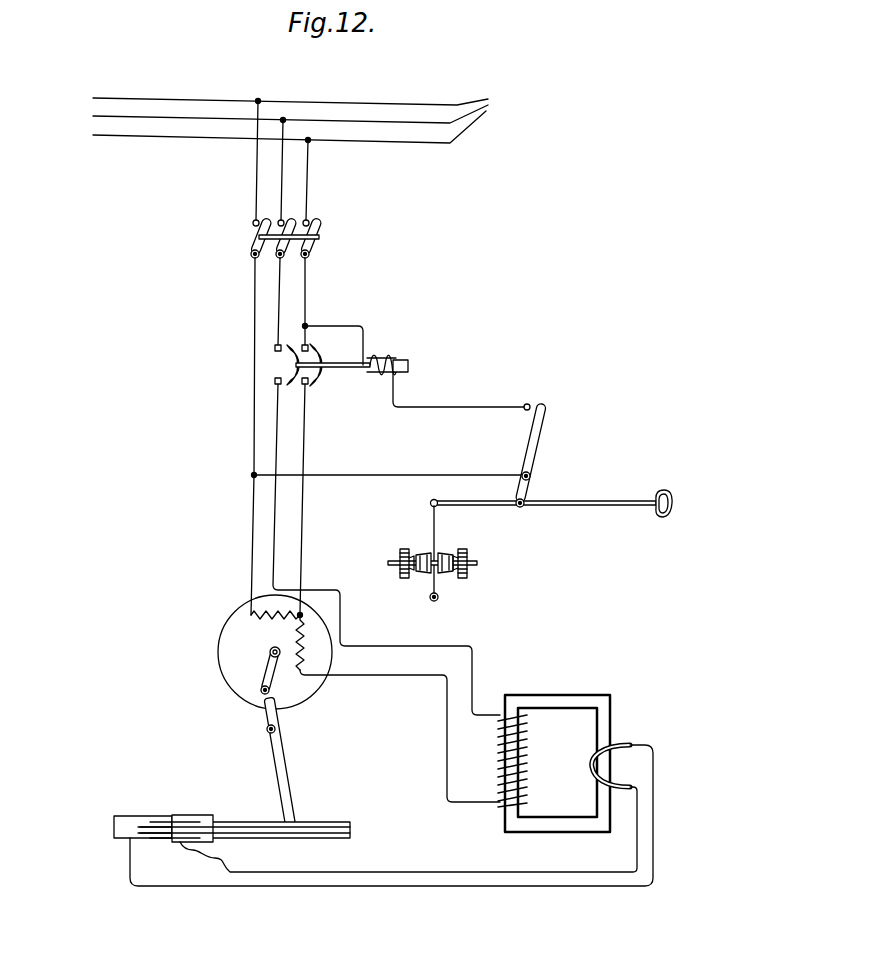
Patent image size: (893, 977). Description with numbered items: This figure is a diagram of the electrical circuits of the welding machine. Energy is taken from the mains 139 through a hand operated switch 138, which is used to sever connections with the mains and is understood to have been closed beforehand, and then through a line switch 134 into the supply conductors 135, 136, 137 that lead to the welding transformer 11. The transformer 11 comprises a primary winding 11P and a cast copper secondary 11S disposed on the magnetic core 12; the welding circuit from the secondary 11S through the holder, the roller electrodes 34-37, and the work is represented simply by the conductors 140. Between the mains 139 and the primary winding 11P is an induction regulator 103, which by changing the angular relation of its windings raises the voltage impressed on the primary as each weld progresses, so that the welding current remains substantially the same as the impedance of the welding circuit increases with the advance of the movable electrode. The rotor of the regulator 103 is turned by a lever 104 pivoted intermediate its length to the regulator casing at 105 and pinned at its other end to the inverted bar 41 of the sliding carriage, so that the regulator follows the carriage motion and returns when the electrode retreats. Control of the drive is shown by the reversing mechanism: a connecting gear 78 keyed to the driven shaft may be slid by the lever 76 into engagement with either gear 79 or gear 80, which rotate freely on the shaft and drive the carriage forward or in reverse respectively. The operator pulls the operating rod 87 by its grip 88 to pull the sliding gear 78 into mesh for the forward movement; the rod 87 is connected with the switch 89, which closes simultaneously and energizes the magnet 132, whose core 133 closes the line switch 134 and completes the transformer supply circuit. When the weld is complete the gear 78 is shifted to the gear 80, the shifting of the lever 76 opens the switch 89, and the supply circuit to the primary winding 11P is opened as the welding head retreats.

The mains 139 is at (489, 99).
The hand operated switch 138 is at (322, 230).
The line switch 134 is at (287, 367).
The magnet 132 is at (389, 356).
The core 133 is at (408, 373).
The supply conductor 135 is at (254, 430).
The supply conductor 136 is at (278, 454).
The supply conductor 137 is at (305, 446).
The switch 89 is at (540, 446).
The operating rod 87 is at (583, 501).
The grip 88 is at (670, 499).
The lever 76 is at (432, 528).
The connecting gear 78 is at (440, 556).
The gear 80 is at (401, 578).
The gear 79 is at (465, 578).
The induction regulator 103 is at (218, 650).
The pivot 105 is at (281, 730).
The lever 104 is at (288, 780).
The inverted bar 41 is at (340, 822).
The roller electrodes 34-37 is at (205, 820).
The welding transformer 11 is at (598, 741).
The magnetic core 12 is at (603, 700).
The primary winding 11P is at (500, 712).
The secondary winding 11S is at (636, 742).
The conductors 140 is at (407, 872).